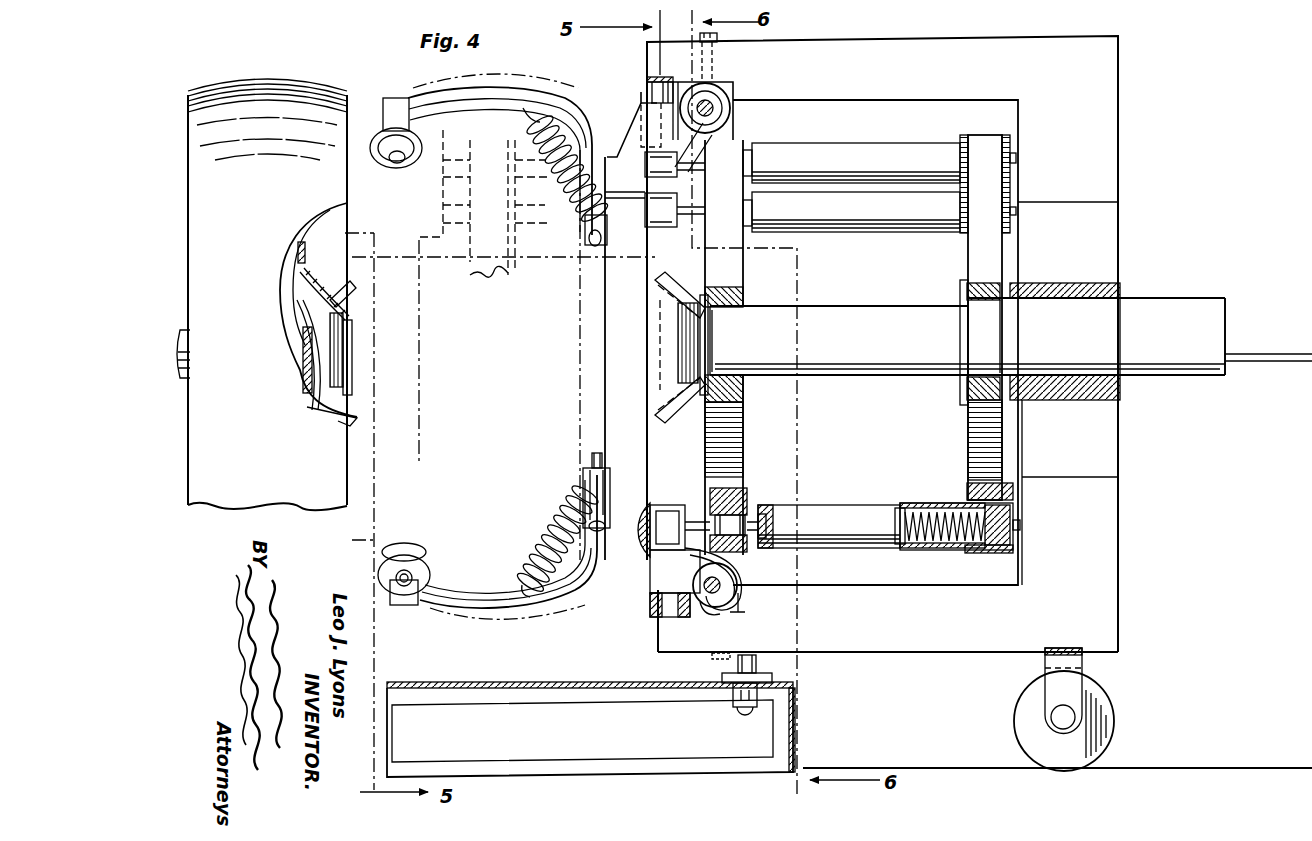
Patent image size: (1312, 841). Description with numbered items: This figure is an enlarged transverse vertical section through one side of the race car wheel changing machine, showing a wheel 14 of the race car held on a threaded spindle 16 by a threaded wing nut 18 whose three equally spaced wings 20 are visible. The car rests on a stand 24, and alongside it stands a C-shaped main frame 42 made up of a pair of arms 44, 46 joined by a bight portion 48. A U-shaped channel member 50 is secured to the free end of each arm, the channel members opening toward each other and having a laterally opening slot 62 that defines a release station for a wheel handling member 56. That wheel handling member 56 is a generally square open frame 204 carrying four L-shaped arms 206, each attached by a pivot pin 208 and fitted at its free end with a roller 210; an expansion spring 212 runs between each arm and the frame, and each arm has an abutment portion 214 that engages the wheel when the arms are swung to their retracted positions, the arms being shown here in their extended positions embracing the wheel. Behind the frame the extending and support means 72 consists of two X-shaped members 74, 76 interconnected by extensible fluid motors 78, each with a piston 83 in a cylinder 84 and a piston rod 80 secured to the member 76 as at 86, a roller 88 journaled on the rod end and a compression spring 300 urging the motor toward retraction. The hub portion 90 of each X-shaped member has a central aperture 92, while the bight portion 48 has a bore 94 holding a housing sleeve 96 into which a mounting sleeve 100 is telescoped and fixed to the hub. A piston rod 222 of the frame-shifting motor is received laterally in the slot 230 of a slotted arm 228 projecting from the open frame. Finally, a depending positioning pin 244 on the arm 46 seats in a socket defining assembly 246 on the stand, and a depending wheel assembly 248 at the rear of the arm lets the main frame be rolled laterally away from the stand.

The wheel 14 is at (335, 93).
The threaded spindle 16 is at (304, 356).
The threaded wing nut 18 is at (320, 400).
The wing 20 is at (342, 285).
The positioning pad or stand 24 is at (799, 740).
The main frame 42 is at (1123, 113).
The arm 44 is at (875, 318).
The arm 46 is at (918, 626).
The bight portion 48 is at (1100, 144).
The channel member 50 is at (662, 79).
The wheel handling member 56 is at (618, 126).
The slot 62 is at (650, 88).
The extending and support means 72 is at (961, 391).
The X-shaped member 74 is at (963, 243).
The X-shaped member 76 is at (747, 264).
The extensible fluid motor 78 is at (885, 151).
The piston rod 80 is at (747, 506).
The piston 83 is at (990, 554).
The cylinder 84 is at (902, 544).
The securing point 86 is at (713, 513).
The roller 88 is at (651, 167).
The hub portion 90 is at (744, 299).
The aperture 92 is at (732, 375).
The bore 94 is at (1118, 289).
The housing sleeve 96 is at (1163, 368).
The mounting sleeve 100 is at (837, 313).
The open frame 204 is at (601, 337).
The L-shaped arm 206 is at (497, 609).
The pivot pin 208 is at (564, 513).
The roller 210 is at (425, 560).
The expansion spring 212 is at (574, 211).
The abutment portion 214 is at (588, 458).
The piston rod 222 is at (736, 586).
The slotted arm 228 is at (738, 603).
The slot 230 is at (716, 612).
The depending positioning pin 244 is at (760, 661).
The socket defining assembly 246 is at (732, 695).
The depending wheel assembly 248 is at (1085, 668).
The compression spring 300 is at (922, 488).